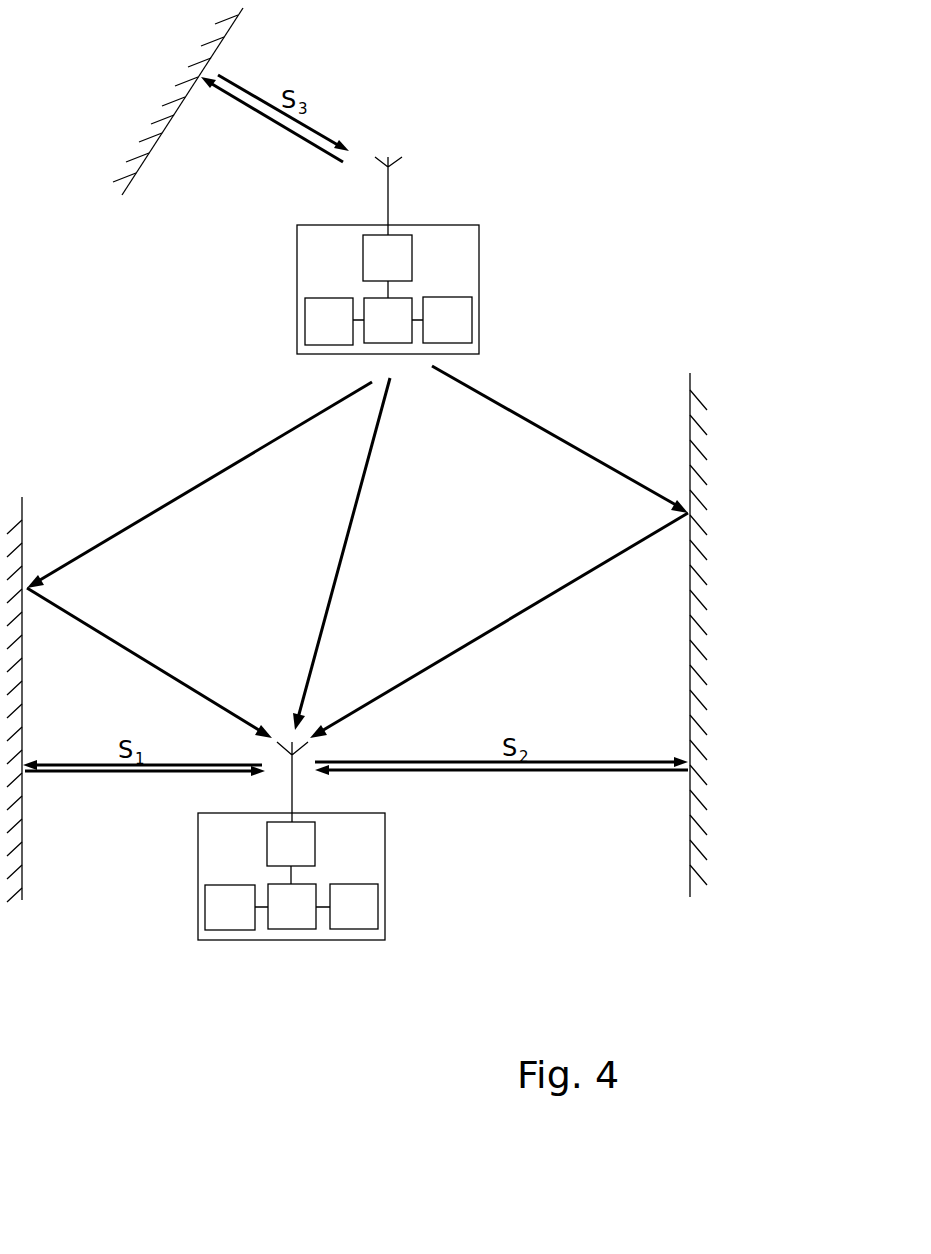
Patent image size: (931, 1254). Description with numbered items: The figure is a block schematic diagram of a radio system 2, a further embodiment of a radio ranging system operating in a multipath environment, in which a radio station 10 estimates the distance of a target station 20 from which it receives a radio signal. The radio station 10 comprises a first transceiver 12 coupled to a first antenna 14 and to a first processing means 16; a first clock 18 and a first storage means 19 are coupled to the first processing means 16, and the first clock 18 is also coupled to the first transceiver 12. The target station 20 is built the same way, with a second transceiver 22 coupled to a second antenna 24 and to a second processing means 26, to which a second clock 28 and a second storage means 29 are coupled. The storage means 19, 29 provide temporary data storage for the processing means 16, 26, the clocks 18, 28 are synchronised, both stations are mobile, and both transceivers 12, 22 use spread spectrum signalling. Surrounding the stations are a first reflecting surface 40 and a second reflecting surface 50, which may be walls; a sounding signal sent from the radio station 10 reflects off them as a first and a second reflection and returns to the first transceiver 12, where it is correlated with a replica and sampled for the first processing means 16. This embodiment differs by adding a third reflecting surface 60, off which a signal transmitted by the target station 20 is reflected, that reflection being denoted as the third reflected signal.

The radio system 2 is at (586, 918).
The radio station 10 is at (387, 838).
The first transceiver 12 is at (267, 839).
The first antenna 14 is at (293, 788).
The first processing means 16 is at (300, 918).
The first clock 18 is at (363, 913).
The first storage means 19 is at (225, 925).
The target station 20 is at (425, 233).
The second transceiver 22 is at (363, 253).
The second antenna 24 is at (383, 183).
The second processing means 26 is at (403, 315).
The second clock 28 is at (465, 317).
The second storage means 29 is at (303, 322).
The first reflecting surface 40 is at (27, 517).
The second reflecting surface 50 is at (690, 400).
The third reflecting surface 60 is at (218, 33).